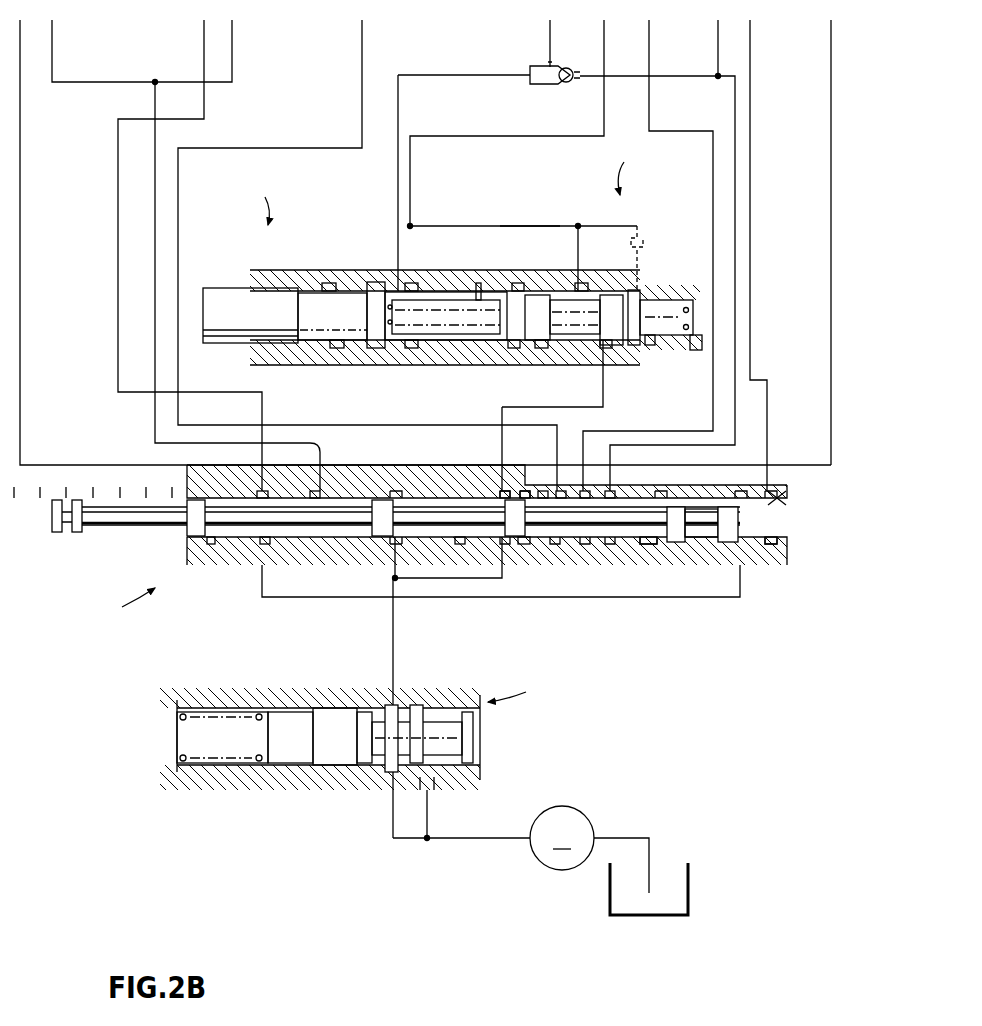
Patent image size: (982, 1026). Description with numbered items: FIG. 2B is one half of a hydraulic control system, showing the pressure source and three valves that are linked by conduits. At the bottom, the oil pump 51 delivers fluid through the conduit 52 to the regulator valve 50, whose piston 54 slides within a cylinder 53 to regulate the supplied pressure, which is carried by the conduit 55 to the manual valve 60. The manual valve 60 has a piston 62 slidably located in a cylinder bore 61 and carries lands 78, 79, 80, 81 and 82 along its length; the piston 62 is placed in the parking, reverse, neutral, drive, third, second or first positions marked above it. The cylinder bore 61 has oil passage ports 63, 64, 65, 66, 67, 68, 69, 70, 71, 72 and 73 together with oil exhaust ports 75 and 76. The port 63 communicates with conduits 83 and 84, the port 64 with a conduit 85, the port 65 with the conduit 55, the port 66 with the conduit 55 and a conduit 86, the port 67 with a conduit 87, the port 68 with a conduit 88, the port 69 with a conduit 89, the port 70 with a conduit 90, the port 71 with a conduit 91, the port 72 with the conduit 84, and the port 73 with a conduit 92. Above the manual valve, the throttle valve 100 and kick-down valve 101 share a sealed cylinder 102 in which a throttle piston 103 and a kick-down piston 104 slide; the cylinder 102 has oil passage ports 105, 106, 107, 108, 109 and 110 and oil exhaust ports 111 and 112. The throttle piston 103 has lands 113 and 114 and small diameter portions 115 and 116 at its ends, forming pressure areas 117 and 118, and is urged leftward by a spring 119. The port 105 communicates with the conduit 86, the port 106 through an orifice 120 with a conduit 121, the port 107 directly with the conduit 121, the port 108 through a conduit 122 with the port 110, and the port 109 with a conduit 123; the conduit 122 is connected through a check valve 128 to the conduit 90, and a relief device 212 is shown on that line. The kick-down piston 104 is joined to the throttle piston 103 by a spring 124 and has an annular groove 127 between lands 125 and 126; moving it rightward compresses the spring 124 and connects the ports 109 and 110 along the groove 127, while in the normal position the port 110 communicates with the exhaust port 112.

The regulator valve 50 is at (383, 727).
The oil pump 51 is at (540, 853).
The conduit 52 is at (428, 845).
The cylinder 53 is at (248, 712).
The piston 54 is at (338, 755).
The conduit 55 is at (393, 655).
The manual valve 60 is at (397, 548).
The cylinder bore 61 is at (463, 545).
The piston 62 is at (112, 522).
The oil passage port 63 is at (266, 491).
The oil passage port 64 is at (322, 491).
The oil passage port 65 is at (396, 555).
The oil passage port 66 is at (503, 498).
The oil passage port 67 is at (524, 491).
The oil passage port 68 is at (543, 491).
The oil passage port 69 is at (561, 491).
The oil passage port 70 is at (585, 491).
The oil passage port 71 is at (610, 491).
The oil passage port 72 is at (770, 544).
The oil passage port 73 is at (784, 491).
The oil exhaust port 75 is at (212, 545).
The oil exhaust port 76 is at (648, 545).
The land 78 is at (193, 538).
The land 79 is at (380, 540).
The land 80 is at (524, 545).
The land 81 is at (676, 545).
The land 82 is at (728, 545).
The conduit 83 is at (204, 52).
The conduit 84 is at (462, 597).
The conduit 85 is at (54, 52).
The conduit 86 is at (500, 407).
The conduit 87 is at (22, 97).
The conduit 88 is at (362, 52).
The conduit 89 is at (655, 48).
The conduit 90 is at (724, 48).
The conduit 91 is at (831, 50).
The conduit 92 is at (750, 52).
The throttle valve 100 is at (662, 172).
The kick-down valve 101 is at (414, 263).
The sealed cylinder 102 is at (452, 345).
The throttle piston 103 is at (575, 340).
The kick-down piston 104 is at (310, 335).
The oil passage port 105 is at (606, 348).
The oil passage port 106 is at (634, 290).
The oil passage port 107 is at (582, 283).
The oil passage port 108 is at (520, 283).
The oil passage port 109 is at (411, 283).
The oil passage port 110 is at (330, 283).
The oil exhaust port 111 is at (540, 348).
The oil exhaust port 112 is at (337, 348).
The land 113 is at (540, 295).
The land 114 is at (618, 345).
The small diameter portion 115 is at (498, 345).
The small diameter portion 116 is at (660, 300).
The pressure area 117 is at (518, 348).
The pressure area 118 is at (650, 345).
The spring 119 is at (690, 350).
The orifice 120 is at (645, 250).
The conduit 121 is at (510, 226).
The conduit 122 is at (399, 100).
The conduit 123 is at (610, 48).
The spring 124 is at (390, 348).
The land 125 is at (245, 330).
The land 126 is at (411, 348).
The annular groove 127 is at (310, 293).
The check valve 128 is at (560, 86).
The relief valve 212 is at (546, 62).